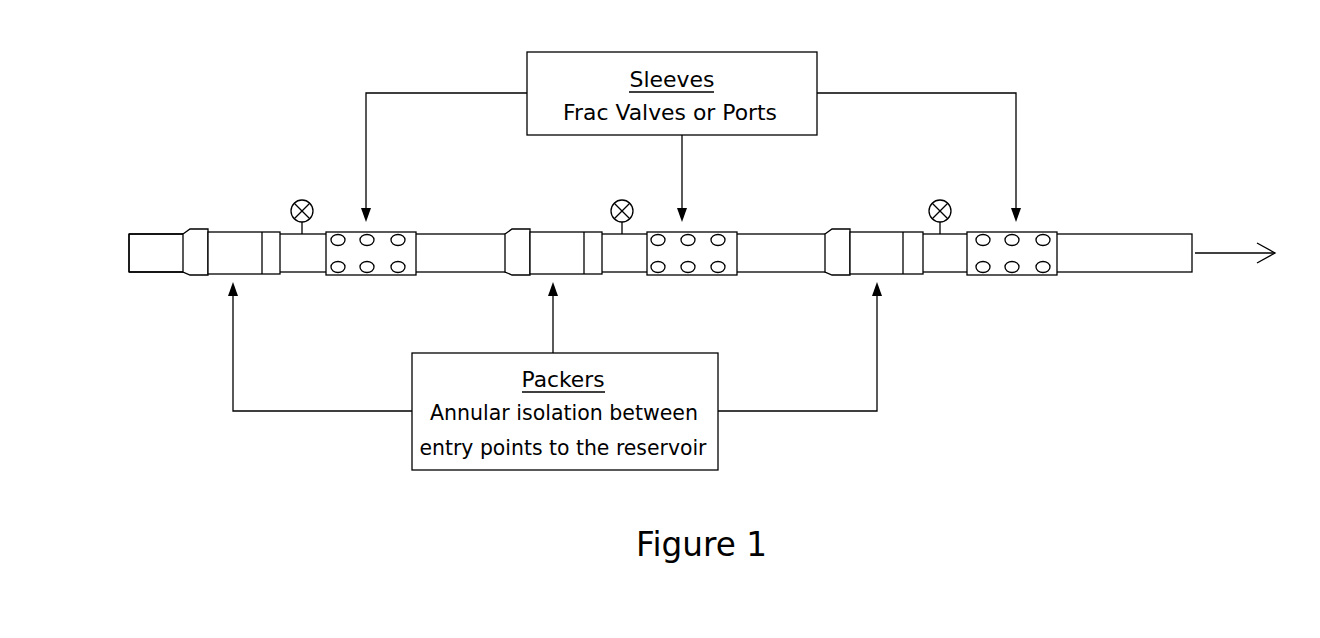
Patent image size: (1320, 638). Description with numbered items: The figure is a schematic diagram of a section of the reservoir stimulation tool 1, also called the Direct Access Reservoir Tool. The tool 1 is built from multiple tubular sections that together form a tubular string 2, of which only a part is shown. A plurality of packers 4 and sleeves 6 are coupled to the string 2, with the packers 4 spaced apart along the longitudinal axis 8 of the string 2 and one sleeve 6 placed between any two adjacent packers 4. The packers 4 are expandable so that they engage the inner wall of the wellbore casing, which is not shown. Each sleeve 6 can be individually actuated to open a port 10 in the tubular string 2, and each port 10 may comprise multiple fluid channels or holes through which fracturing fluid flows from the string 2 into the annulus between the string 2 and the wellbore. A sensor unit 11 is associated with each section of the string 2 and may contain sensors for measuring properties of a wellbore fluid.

The reservoir stimulation tool 1 is at (290, 133).
The tubular string 2 is at (153, 273).
The packers 4 is at (888, 275).
The sleeves 6 is at (1043, 275).
The longitudinal axis 8 is at (1228, 253).
The port 10 is at (1025, 255).
The sensor unit 11 is at (940, 200).